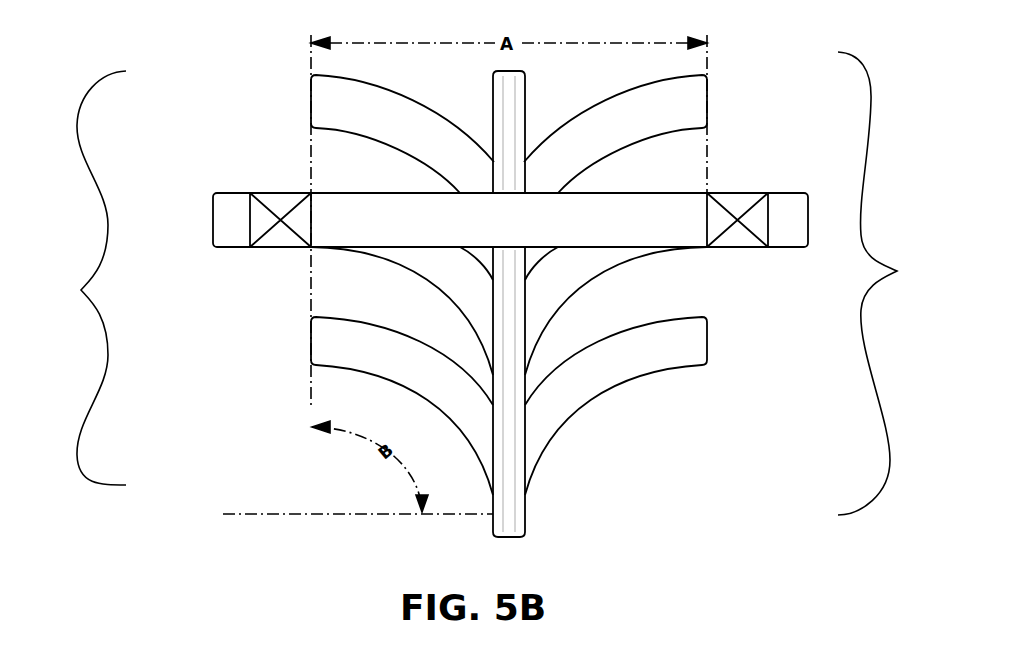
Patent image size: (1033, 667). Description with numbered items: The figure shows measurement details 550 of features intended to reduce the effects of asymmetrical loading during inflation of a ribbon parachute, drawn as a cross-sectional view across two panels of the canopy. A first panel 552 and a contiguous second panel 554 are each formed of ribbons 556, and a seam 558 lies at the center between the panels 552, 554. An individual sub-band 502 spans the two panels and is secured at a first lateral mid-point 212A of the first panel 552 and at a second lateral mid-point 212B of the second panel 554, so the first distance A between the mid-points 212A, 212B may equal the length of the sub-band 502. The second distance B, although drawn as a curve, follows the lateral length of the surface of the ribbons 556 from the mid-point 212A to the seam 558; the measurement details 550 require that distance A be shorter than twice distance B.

The measurement details 550 is at (757, 56).
The first panel 552 is at (79, 278).
The second panel 554 is at (891, 283).
The ribbons 556 is at (410, 258).
The seam 558 is at (535, 503).
The sub-band 502 is at (499, 250).
The first lateral mid-point 212A is at (275, 260).
The second lateral mid-point 212B is at (717, 260).